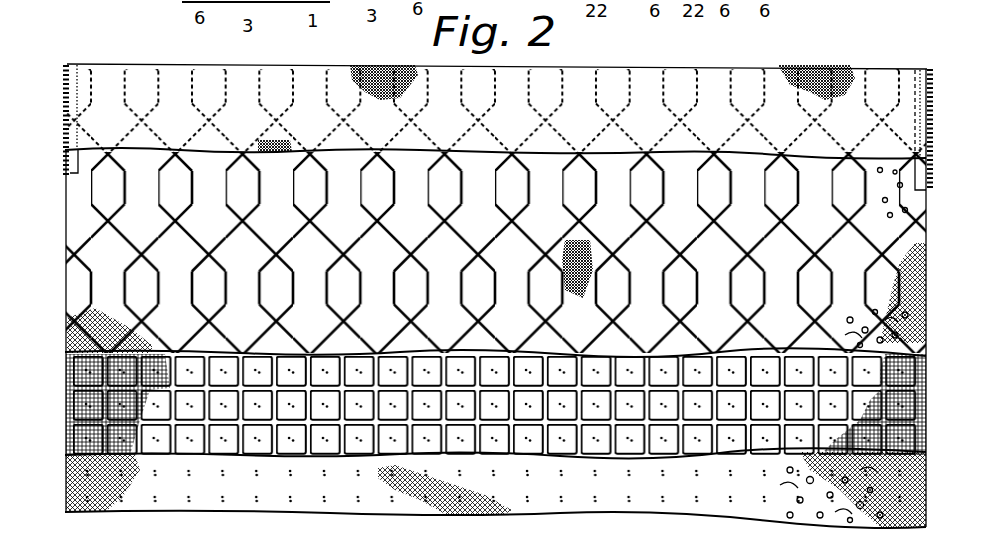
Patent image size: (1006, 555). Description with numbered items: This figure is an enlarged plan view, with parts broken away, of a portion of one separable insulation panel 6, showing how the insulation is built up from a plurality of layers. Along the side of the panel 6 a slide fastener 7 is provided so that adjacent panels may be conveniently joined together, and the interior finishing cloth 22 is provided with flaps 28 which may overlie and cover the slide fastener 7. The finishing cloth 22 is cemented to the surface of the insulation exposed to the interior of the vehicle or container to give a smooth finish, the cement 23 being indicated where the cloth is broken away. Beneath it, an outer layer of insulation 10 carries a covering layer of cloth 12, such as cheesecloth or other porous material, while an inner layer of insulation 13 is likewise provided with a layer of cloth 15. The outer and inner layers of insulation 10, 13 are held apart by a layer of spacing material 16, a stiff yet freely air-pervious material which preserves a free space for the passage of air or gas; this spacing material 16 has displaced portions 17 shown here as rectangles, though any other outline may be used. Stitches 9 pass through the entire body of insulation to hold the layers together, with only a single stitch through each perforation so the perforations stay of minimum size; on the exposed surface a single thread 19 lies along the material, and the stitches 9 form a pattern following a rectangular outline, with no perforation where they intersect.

The panel 6 is at (930, 248).
The slide fastener 7 is at (65, 150).
The stitches 9 is at (873, 95).
The outer layer of insulation 10 is at (848, 520).
The covering layer of cloth 12 is at (926, 482).
The inner layer of insulation 13 is at (916, 336).
The layer of cloth 15 is at (928, 295).
The layer of spacing material 16 is at (926, 391).
The displaced portions 17 is at (220, 403).
The single thread 19 is at (262, 260).
The interior finishing cloth 22 is at (816, 78).
The cement 23 is at (912, 200).
The flaps 28 is at (75, 98).